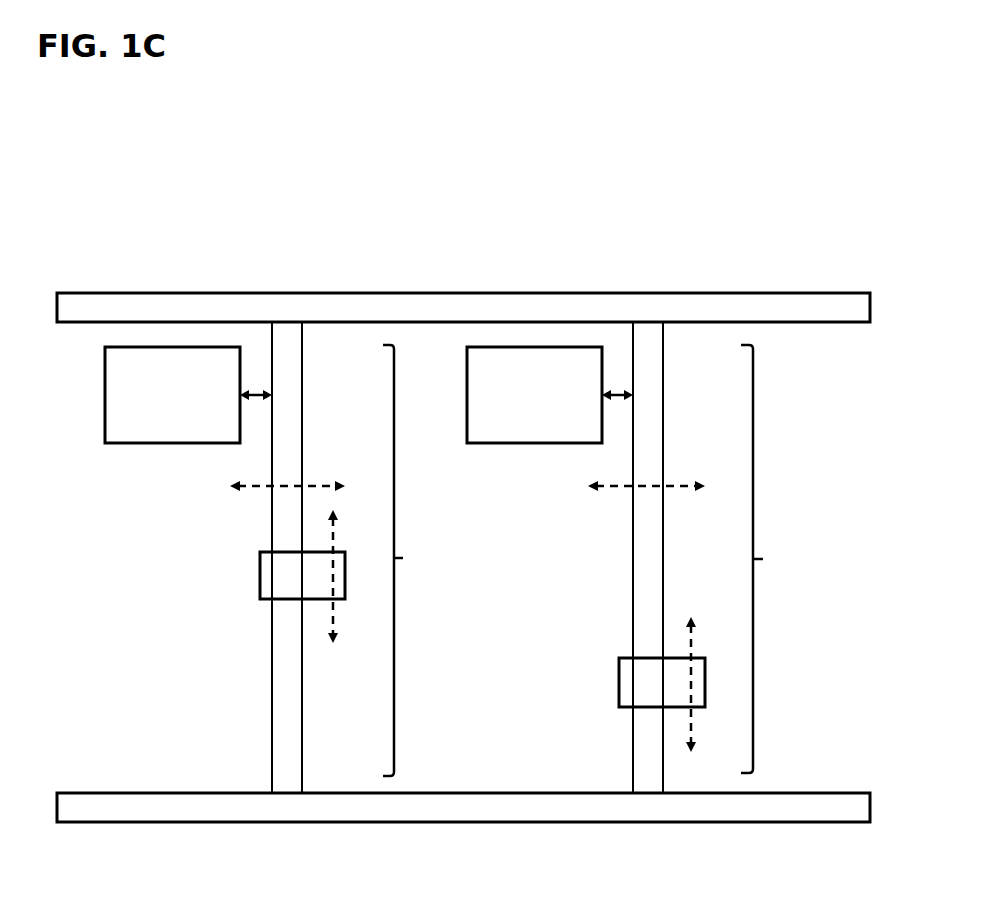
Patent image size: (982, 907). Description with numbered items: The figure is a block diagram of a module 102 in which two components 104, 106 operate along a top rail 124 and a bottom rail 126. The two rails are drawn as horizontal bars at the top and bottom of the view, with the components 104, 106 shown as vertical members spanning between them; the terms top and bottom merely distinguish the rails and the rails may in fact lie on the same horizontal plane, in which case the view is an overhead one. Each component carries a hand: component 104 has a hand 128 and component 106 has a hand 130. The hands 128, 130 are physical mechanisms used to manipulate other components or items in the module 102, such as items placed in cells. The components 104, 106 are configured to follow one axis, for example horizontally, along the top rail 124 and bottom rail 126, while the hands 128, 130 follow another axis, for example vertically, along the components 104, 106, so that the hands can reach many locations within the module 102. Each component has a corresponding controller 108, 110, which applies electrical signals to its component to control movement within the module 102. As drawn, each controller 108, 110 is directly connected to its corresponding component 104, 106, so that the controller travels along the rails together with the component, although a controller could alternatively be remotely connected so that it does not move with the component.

The module 102 is at (470, 486).
The component 104 is at (316, 557).
The component 106 is at (675, 557).
The controller 108 is at (188, 395).
The controller 110 is at (550, 395).
The top rail 124 is at (461, 285).
The bottom rail 126 is at (462, 830).
The hand 128 is at (250, 577).
The hand 130 is at (609, 682).